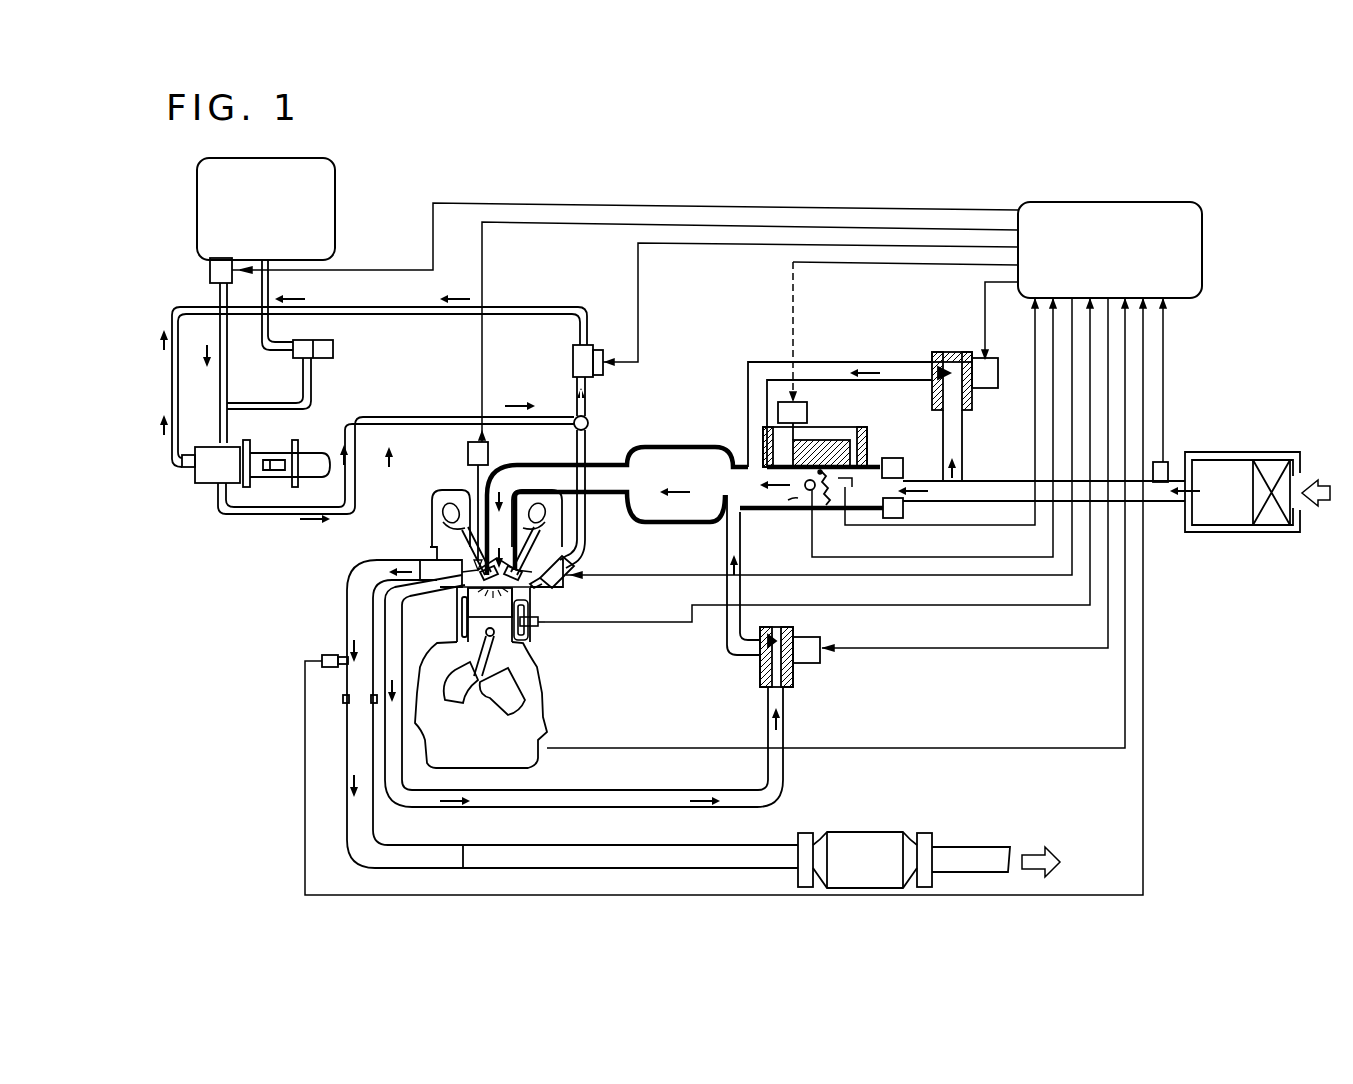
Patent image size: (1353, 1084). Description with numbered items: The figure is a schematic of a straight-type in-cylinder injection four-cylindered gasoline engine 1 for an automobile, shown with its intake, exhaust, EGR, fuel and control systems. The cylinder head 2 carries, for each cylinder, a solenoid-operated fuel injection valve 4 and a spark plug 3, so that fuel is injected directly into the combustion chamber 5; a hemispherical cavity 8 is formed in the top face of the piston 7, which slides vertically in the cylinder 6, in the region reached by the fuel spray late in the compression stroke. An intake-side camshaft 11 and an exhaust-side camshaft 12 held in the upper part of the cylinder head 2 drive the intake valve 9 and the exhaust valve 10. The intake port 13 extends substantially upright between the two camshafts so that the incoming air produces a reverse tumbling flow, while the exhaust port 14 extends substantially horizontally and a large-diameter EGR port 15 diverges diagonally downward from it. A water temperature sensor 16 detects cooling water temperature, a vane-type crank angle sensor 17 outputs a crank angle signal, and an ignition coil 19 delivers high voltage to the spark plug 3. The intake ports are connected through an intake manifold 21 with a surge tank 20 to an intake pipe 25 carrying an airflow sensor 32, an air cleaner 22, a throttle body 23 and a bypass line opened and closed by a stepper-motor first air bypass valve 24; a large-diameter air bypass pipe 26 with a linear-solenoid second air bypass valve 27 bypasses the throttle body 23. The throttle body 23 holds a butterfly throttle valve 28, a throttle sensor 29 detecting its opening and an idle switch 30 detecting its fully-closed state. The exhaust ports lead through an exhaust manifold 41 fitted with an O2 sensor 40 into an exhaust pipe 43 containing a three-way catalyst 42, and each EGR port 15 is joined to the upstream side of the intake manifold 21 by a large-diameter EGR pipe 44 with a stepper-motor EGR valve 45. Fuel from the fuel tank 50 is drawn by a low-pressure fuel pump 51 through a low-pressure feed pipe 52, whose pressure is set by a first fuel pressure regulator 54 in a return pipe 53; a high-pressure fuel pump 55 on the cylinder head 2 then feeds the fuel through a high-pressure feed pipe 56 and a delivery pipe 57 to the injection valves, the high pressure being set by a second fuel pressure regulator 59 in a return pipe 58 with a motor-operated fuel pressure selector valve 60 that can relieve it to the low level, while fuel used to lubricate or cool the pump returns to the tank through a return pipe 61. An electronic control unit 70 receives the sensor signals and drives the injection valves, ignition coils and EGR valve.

The engine 1 is at (560, 683).
The cylinder head 2 is at (444, 500).
The spark plug 3 is at (478, 562).
The fuel injection valve 4 is at (530, 582).
The combustion chamber 5 is at (465, 605).
The cylinder 6 is at (530, 645).
The piston 7 is at (470, 640).
The hemispherical cavity 8 is at (540, 600).
The intake valve 9 is at (565, 556).
The exhaust valve 10 is at (443, 525).
The intake-side camshaft 11 is at (545, 518).
The exhaust-side camshaft 12 is at (312, 460).
The intake port 13 is at (518, 480).
The exhaust port 14 is at (410, 562).
The EGR port 15 is at (445, 592).
The water temperature sensor 16 is at (540, 622).
The crank angle sensor 17 is at (505, 725).
The ignition coil 19 is at (467, 450).
The surge tank 20 is at (690, 445).
The intake manifold 21 is at (590, 497).
The air cleaner 22 is at (1270, 452).
The throttle body 23 is at (807, 500).
The first air bypass valve 24 is at (808, 412).
The intake pipe 25 is at (1010, 480).
The air bypass pipe 26 is at (885, 360).
The second air bypass valve 27 is at (945, 350).
The throttle valve 28 is at (795, 498).
The throttle sensor 29 is at (855, 478).
The idle switch 30 is at (823, 487).
The airflow sensor 32 is at (1165, 460).
The O2 sensor 40 is at (326, 655).
The exhaust manifold 41 is at (347, 600).
The three-way catalyst 42 is at (872, 840).
The exhaust pipe 43 is at (758, 855).
The EGR pipe 44 is at (782, 768).
The EGR valve 45 is at (808, 672).
The fuel tank 50 is at (338, 190).
The low-pressure fuel pump 51 is at (210, 271).
The low-pressure feed pipe 52 is at (225, 417).
The return pipe 53 is at (315, 380).
The first fuel pressure regulator 54 is at (335, 347).
The high-pressure fuel pump 55 is at (202, 487).
The high-pressure feed pipe 56 is at (267, 513).
The delivery pipe 57 is at (590, 420).
The return pipe 58 is at (518, 305).
The second fuel pressure regulator 59 is at (572, 356).
The fuel pressure selector valve 60 is at (598, 350).
The return pipe 61 is at (172, 373).
The electronic control unit 70 is at (1203, 252).